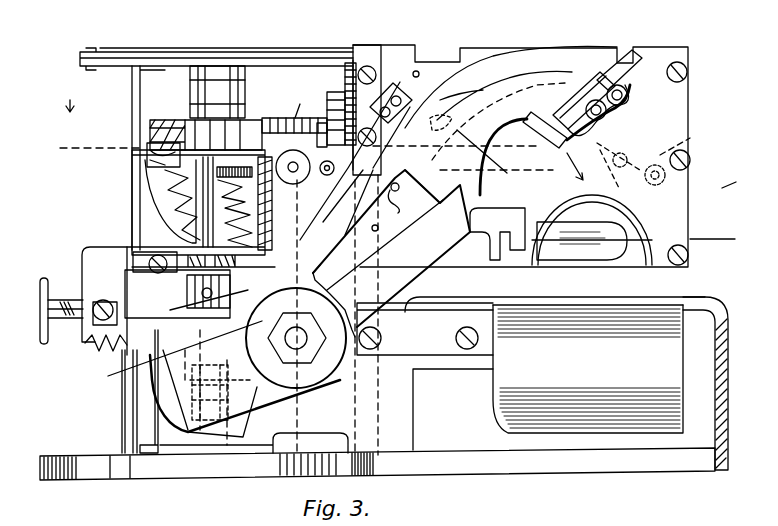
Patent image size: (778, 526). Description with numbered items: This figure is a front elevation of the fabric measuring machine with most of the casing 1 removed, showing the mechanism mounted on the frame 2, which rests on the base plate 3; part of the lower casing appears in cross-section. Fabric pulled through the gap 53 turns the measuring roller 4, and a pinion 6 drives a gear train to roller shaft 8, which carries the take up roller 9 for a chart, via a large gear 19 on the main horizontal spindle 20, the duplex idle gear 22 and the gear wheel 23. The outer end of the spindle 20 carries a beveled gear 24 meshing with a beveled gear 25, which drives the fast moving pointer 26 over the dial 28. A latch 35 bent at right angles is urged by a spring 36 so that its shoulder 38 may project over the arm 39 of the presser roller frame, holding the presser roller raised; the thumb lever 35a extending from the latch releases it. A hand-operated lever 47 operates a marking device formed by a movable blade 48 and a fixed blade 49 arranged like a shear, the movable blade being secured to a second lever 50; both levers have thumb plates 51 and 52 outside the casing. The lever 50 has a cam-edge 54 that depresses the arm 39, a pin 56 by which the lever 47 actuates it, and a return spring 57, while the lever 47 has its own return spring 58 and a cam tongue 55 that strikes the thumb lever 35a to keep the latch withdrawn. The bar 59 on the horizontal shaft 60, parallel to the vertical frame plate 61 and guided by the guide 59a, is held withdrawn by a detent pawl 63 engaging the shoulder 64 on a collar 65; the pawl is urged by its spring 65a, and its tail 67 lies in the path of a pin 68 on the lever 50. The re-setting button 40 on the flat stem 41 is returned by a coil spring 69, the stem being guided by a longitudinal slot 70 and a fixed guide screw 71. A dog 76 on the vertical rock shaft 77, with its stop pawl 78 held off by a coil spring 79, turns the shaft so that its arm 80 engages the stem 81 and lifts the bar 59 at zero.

The casing 1 is at (726, 386).
The frame 2 is at (389, 135).
The base plate 3 is at (678, 466).
The measuring roller 4 is at (548, 377).
The pinion 6 is at (553, 156).
The roller shaft 8 is at (345, 108).
The take up roller 9 is at (528, 127).
The large gear 19 is at (320, 110).
The main horizontal spindle 20 is at (296, 338).
The duplex idle gear 22 is at (393, 94).
The gear wheel 23 is at (354, 46).
The beveled gear 24 is at (195, 285).
The beveled gear 25 is at (298, 143).
The fast moving pointer 26 is at (180, 128).
The dial 28 is at (210, 54).
The latch 35 is at (442, 125).
The thumb lever 35a is at (597, 252).
The spring 36 is at (618, 164).
The shoulder 38 is at (592, 221).
The arm 39 is at (504, 262).
The re-setting button 40 is at (40, 322).
The flat stem 41 is at (62, 300).
The hand-operated lever 47 is at (485, 95).
The movable blade 48 is at (391, 253).
The fixed blade 49 is at (425, 329).
The hand-operated lever 50 is at (528, 62).
The thumb plate 51 is at (586, 90).
The thumb plate 52 is at (632, 52).
The gap 53 is at (643, 284).
The cam-edge 54 is at (455, 195).
The cam tongue 55 is at (553, 150).
The pin 56 is at (403, 209).
The return spring 57 is at (140, 170).
The return spring 58 is at (165, 200).
The bar 59 is at (690, 138).
The guide 59a is at (688, 206).
The horizontal shaft 60 is at (378, 170).
The vertical frame plate 61 is at (378, 47).
The detent pawl 63 is at (373, 190).
The shoulder 64 is at (234, 207).
The collar 65 is at (418, 72).
The stud 65a is at (382, 228).
The tail 67 is at (385, 245).
The pin 68 is at (314, 258).
The coil spring 69 is at (112, 355).
The longitudinal slot 70 is at (132, 370).
The guide screw 71 is at (147, 350).
The dog 76 is at (190, 112).
The vertical rock shaft 77 is at (205, 95).
The stop pawl 78 is at (173, 143).
The coil spring 79 is at (150, 150).
The arm 80 is at (262, 405).
The stem 81 is at (305, 408).